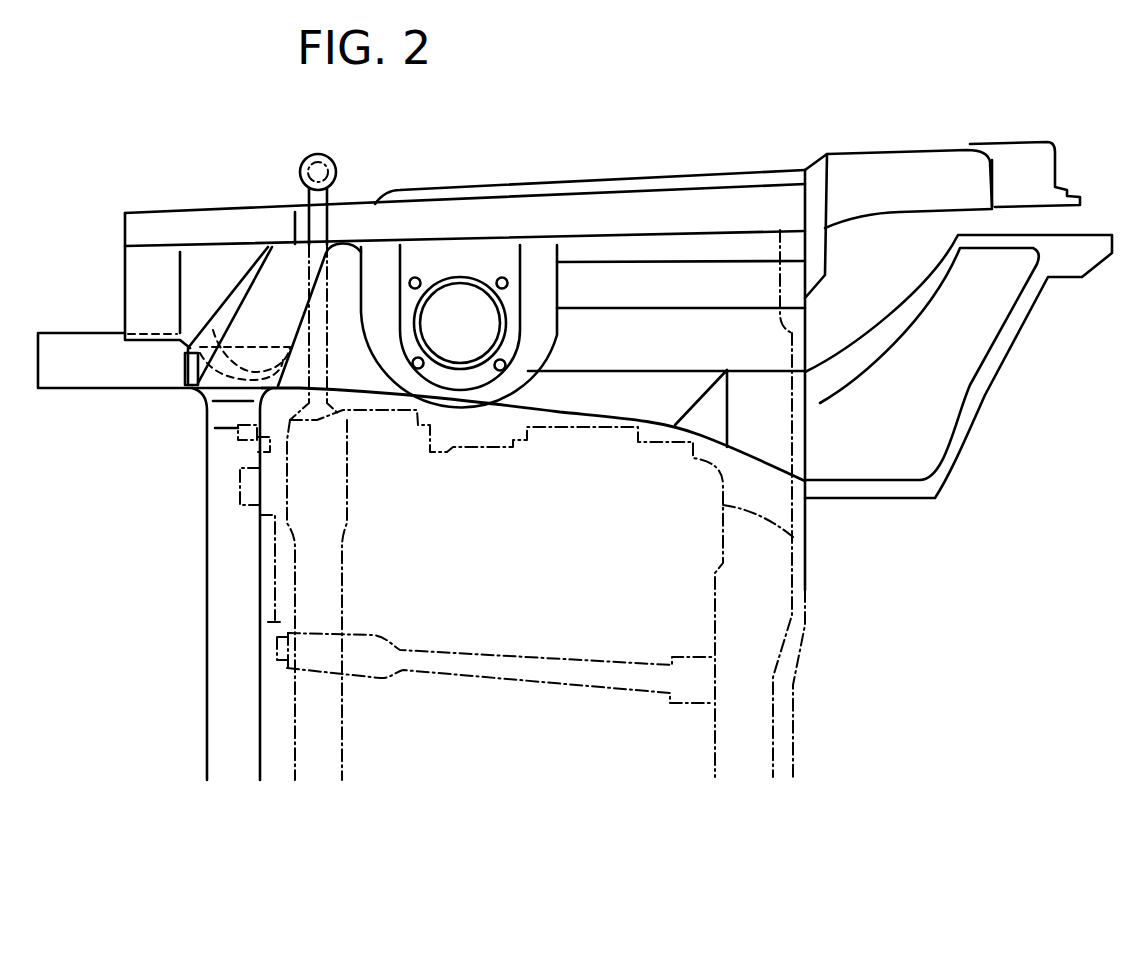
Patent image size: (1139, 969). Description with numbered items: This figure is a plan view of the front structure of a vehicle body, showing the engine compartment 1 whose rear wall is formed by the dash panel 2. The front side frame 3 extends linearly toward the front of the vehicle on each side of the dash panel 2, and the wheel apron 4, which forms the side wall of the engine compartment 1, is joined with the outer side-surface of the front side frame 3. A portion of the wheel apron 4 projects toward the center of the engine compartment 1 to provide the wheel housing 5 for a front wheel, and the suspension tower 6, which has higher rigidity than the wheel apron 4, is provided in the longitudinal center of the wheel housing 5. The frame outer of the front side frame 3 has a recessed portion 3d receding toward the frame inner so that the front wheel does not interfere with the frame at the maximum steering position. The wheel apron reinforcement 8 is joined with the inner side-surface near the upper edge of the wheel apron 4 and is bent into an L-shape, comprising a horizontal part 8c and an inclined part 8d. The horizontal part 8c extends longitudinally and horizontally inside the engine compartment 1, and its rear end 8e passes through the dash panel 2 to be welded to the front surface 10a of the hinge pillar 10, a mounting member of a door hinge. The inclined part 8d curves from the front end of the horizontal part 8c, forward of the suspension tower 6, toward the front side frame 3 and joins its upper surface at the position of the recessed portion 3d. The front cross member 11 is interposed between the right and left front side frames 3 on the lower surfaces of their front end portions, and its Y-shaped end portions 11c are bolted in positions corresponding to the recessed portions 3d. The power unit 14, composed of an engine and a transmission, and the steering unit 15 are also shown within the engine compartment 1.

The engine compartment 1 is at (564, 538).
The dash panel 2 is at (808, 590).
The front side frame 3 is at (72, 393).
The recessed portion 3d is at (213, 330).
The wheel apron 4 is at (593, 327).
The wheel housing 5 is at (340, 283).
The suspension tower 6 is at (469, 232).
The wheel apron reinforcement 8 is at (734, 170).
The horizontal part 8c is at (640, 210).
The inclined part 8d is at (266, 288).
The rear end 8e is at (953, 149).
The hinge pillar 10 is at (1050, 143).
The front surface 10a is at (990, 183).
The front cross member 11 is at (207, 597).
The end portions 11c is at (185, 360).
The power unit 14 is at (793, 540).
The steering unit 15 is at (390, 632).